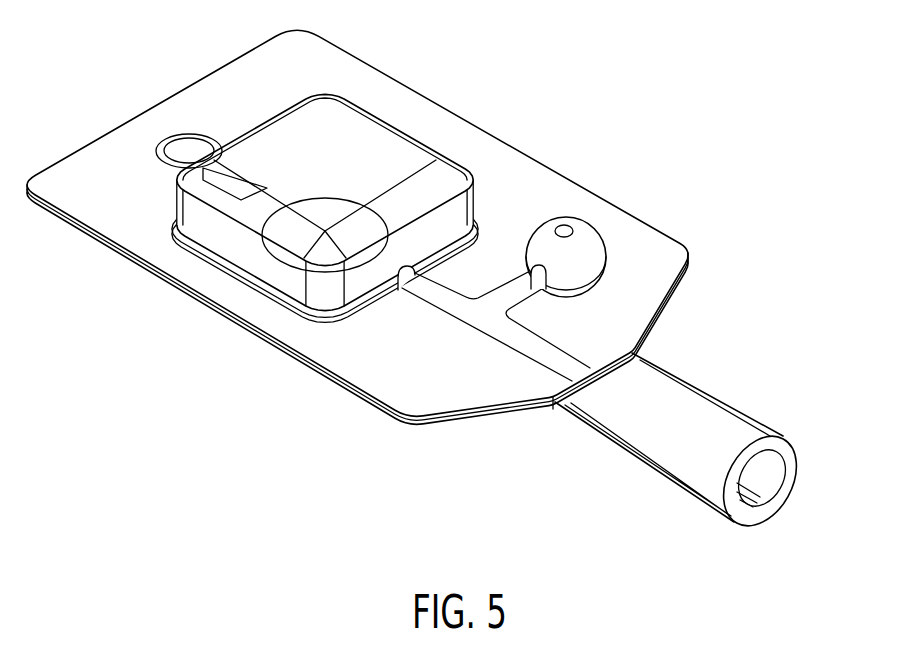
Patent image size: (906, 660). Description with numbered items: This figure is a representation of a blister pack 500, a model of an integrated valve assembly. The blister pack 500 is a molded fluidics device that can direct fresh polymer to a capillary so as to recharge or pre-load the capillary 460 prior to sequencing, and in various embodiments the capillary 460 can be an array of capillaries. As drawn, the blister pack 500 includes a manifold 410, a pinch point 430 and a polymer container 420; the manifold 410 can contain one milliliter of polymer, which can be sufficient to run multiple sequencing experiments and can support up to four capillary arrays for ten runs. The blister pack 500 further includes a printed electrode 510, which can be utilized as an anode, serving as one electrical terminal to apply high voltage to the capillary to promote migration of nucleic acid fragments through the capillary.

The blister pack 500 is at (530, 71).
The manifold 410 is at (357, 133).
The polymer container 420 is at (590, 233).
The pinch point 430 is at (448, 295).
The capillary 460 is at (703, 392).
The printed electrode 510 is at (184, 146).